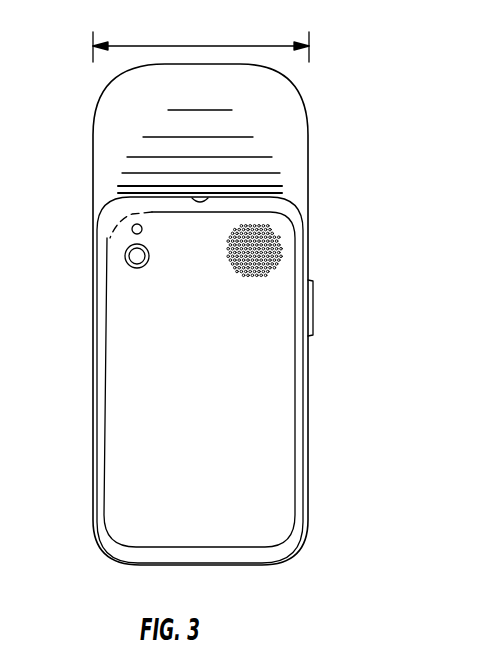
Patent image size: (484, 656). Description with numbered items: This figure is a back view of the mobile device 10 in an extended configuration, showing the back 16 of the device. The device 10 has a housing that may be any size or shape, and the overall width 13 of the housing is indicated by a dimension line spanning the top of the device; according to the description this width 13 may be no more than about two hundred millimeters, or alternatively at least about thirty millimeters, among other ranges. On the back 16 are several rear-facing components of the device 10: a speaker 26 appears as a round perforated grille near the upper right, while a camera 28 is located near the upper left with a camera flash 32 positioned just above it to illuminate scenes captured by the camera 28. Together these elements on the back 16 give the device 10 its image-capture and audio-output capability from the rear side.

The device 10 is at (312, 91).
The width 13 is at (190, 46).
The back 16 is at (200, 380).
The speaker 26 is at (267, 242).
The camera 28 is at (124, 259).
The camera flash 32 is at (131, 228).